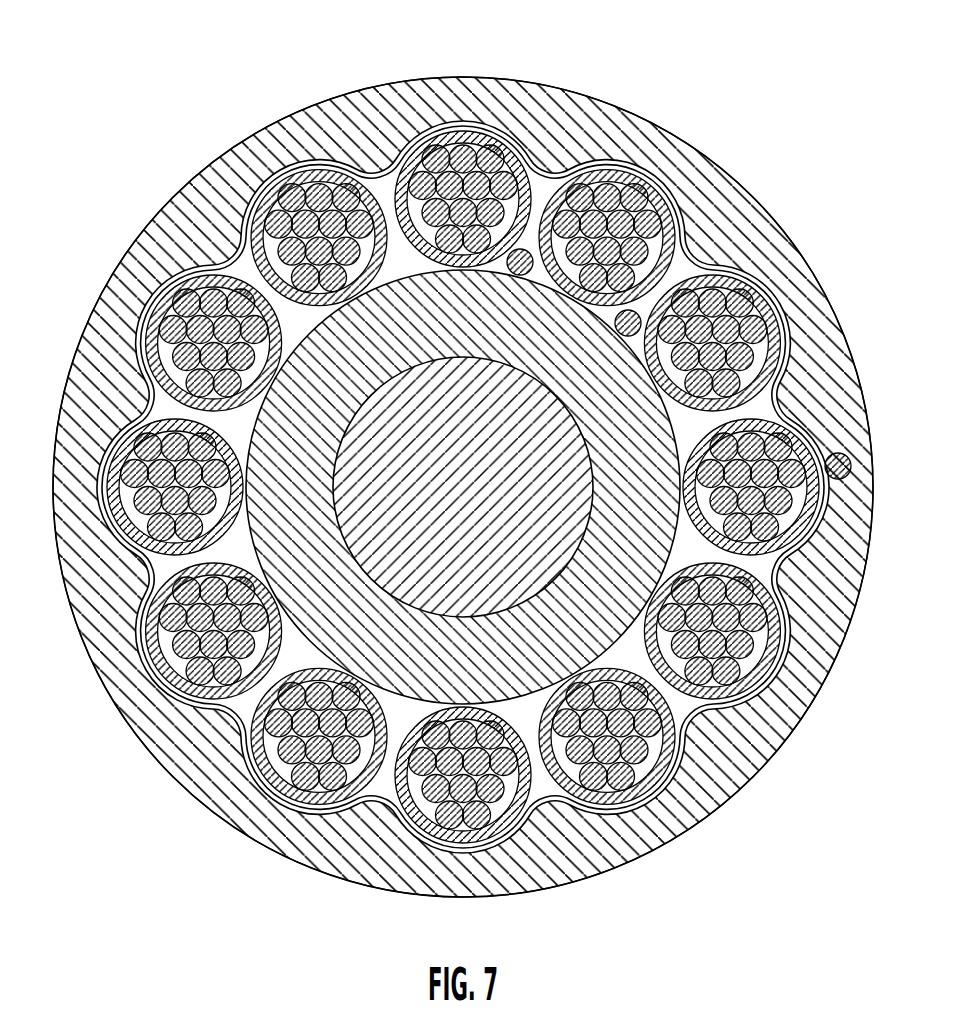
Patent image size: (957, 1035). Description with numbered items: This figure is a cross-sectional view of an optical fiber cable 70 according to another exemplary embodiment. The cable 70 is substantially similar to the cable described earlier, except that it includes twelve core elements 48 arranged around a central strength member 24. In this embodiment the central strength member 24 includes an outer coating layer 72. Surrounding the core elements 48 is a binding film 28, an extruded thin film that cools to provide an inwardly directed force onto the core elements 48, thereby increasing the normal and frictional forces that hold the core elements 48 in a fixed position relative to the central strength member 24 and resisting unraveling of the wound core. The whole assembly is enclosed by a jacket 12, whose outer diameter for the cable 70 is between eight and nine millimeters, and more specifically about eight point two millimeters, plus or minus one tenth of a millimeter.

The jacket 12 is at (612, 128).
The central strength member 24 is at (495, 595).
The binding film 28 is at (545, 178).
The core elements 48 is at (472, 190).
The cable 70 is at (748, 103).
The outer coating layer 72 is at (747, 780).